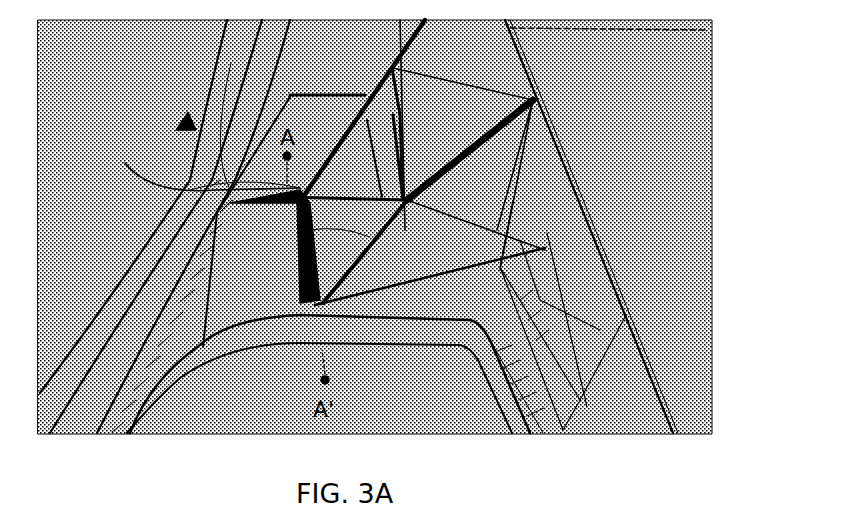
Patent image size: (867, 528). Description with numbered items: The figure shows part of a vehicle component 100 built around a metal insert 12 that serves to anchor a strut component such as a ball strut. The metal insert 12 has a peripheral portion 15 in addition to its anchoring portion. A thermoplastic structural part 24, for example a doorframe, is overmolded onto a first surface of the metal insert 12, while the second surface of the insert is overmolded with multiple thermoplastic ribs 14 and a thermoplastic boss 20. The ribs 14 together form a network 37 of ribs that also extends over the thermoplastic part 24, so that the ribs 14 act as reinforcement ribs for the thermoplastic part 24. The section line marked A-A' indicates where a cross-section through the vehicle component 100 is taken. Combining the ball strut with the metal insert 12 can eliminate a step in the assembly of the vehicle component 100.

The thermoplastic structural part 24 is at (226, 50).
The vehicle component 100 is at (182, 120).
The thermoplastic boss 20 is at (232, 226).
The peripheral portion 15 is at (147, 232).
The metal insert 12 is at (343, 132).
The thermoplastic rib 14 is at (357, 290).
The network of ribs 37 is at (583, 434).